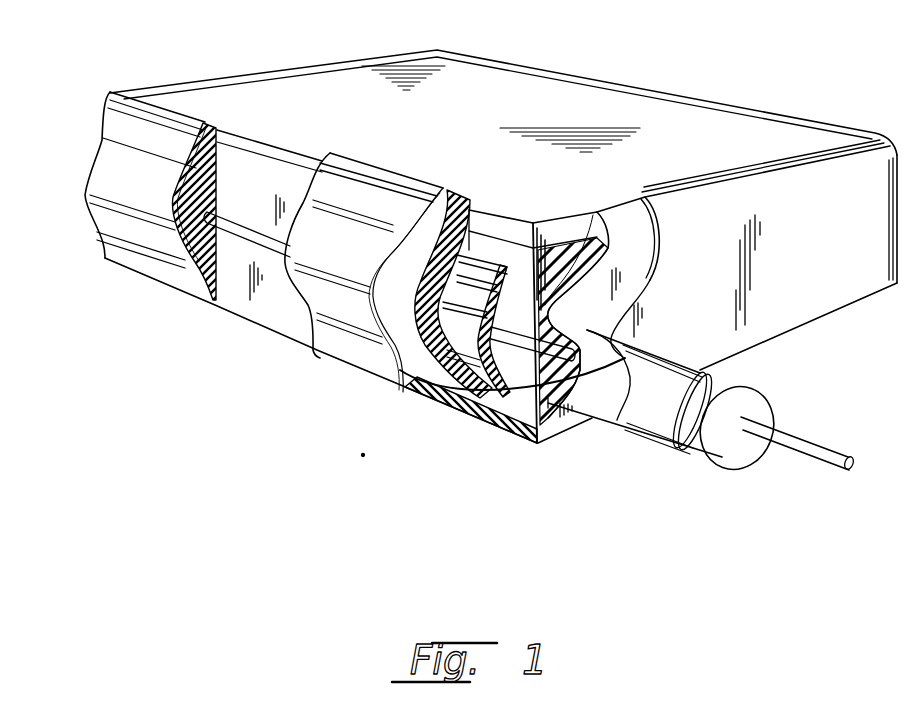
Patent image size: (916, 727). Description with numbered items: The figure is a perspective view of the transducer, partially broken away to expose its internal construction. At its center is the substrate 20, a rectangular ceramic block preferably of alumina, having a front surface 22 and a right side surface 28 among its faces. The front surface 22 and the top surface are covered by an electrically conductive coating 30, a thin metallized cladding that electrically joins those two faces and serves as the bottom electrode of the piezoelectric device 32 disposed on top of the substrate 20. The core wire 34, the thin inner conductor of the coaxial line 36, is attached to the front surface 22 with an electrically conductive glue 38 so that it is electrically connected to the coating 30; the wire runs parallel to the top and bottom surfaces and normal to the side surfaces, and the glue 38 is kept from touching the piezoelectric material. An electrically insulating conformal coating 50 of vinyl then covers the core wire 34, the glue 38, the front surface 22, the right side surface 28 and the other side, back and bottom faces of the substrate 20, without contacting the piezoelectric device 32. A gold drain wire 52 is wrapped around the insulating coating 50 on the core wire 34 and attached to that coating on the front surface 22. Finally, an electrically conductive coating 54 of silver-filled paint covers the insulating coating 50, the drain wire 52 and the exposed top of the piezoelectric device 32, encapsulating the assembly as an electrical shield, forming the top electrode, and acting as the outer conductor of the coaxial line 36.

The substrate 20 is at (233, 313).
The front surface 22 is at (273, 199).
The right side surface 28 is at (810, 258).
The electrically conductive coating 30 is at (262, 307).
The piezoelectric device 32 is at (501, 228).
The core wire 34 is at (807, 453).
The coaxial line 36 is at (647, 437).
The electrically conductive glue 38 is at (493, 402).
The insulating conformal coating 50 is at (400, 360).
The drain wire 52 is at (548, 405).
The electrically conductive coating 54 is at (205, 285).